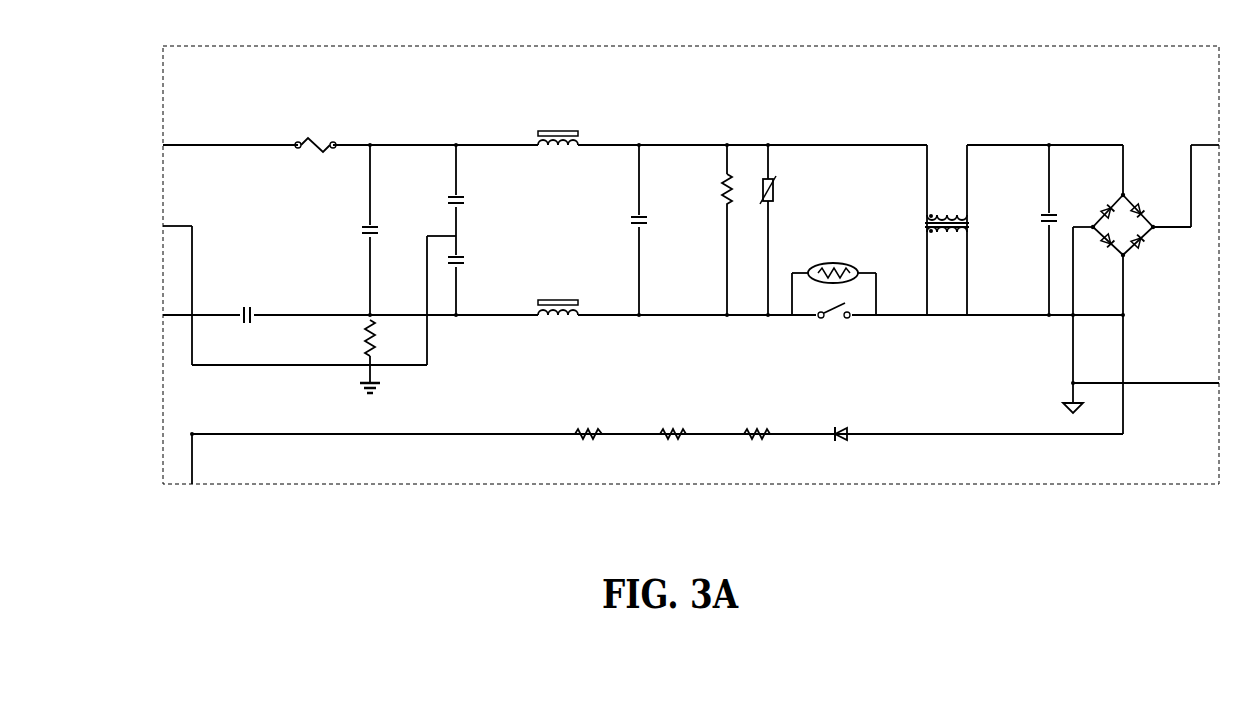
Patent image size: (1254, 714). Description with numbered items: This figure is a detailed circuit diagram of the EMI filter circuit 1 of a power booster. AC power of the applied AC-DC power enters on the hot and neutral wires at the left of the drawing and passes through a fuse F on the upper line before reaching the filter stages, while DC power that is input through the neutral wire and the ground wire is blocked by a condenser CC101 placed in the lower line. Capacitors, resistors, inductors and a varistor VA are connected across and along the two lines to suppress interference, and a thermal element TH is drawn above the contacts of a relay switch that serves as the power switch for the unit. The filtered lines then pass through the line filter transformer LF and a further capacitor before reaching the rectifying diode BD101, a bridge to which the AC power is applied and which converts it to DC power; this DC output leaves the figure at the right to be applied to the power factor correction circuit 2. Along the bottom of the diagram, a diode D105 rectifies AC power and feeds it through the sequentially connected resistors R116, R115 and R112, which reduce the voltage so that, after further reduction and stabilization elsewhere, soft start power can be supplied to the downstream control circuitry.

The fuse F is at (315, 128).
The condenser CC101 is at (244, 298).
The varistor VA is at (781, 190).
The thermal element (heater) of relay TH is at (833, 276).
The EMI filter circuit 1 is at (801, 305).
The power factor correction (PFC) circuit 2 is at (863, 305).
The line filter transformer LF is at (931, 174).
The rectifying diode BD101 is at (1126, 185).
The resistor R116 is at (583, 421).
The resistor R115 is at (667, 421).
The resistor R112 is at (751, 421).
The diode D105 is at (836, 422).